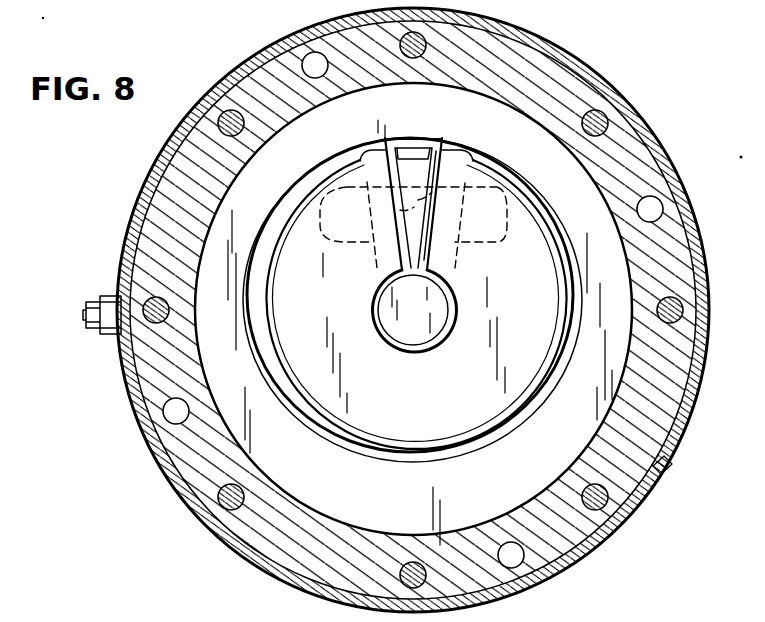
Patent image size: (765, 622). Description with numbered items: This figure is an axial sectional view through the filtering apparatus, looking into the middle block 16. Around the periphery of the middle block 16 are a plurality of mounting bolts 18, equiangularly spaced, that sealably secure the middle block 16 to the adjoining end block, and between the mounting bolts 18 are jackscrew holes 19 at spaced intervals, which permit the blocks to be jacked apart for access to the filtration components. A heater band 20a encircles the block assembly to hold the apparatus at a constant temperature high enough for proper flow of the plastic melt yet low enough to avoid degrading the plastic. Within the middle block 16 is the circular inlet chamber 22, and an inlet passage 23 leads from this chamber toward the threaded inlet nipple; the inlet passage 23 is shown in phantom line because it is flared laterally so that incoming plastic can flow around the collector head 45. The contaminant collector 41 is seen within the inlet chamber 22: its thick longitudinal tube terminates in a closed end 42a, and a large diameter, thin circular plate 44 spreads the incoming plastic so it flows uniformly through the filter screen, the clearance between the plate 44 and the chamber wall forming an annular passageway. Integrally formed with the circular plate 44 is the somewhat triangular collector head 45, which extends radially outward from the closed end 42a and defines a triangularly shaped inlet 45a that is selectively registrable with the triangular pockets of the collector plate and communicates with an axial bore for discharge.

The middle block 16 is at (594, 77).
The mounting bolts 18 is at (683, 310).
The jackscrew holes 19 is at (305, 58).
The heater band 20a is at (613, 87).
The inlet chamber 22 is at (405, 474).
The inlet passage 23 is at (498, 195).
The contaminant collector 41 is at (544, 228).
The closed end of tube 42a is at (415, 338).
The circular plate 44 is at (541, 252).
The collector head 45 is at (448, 160).
The triangularly shaped inlet 45a is at (415, 153).